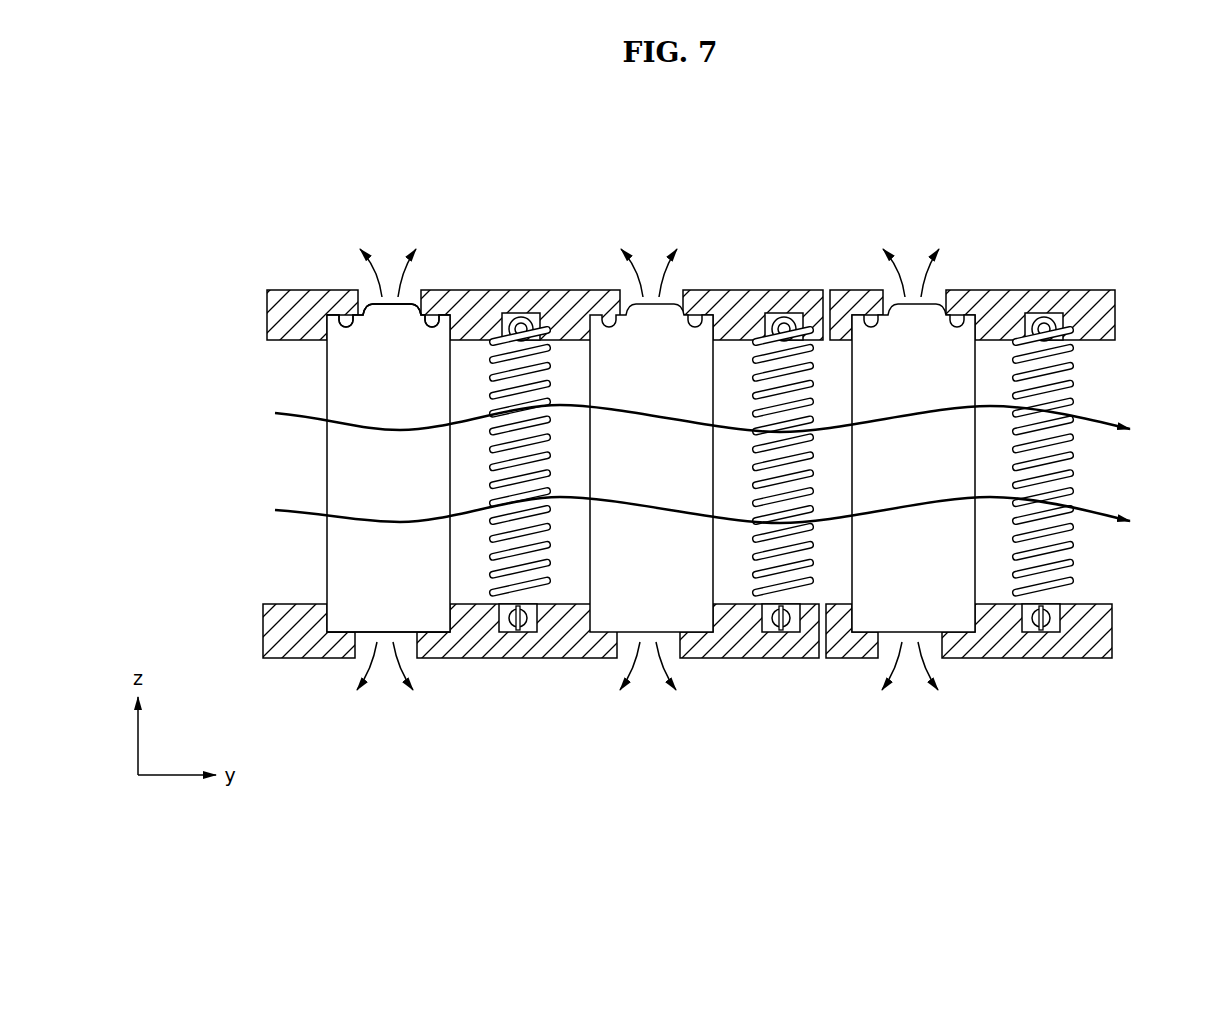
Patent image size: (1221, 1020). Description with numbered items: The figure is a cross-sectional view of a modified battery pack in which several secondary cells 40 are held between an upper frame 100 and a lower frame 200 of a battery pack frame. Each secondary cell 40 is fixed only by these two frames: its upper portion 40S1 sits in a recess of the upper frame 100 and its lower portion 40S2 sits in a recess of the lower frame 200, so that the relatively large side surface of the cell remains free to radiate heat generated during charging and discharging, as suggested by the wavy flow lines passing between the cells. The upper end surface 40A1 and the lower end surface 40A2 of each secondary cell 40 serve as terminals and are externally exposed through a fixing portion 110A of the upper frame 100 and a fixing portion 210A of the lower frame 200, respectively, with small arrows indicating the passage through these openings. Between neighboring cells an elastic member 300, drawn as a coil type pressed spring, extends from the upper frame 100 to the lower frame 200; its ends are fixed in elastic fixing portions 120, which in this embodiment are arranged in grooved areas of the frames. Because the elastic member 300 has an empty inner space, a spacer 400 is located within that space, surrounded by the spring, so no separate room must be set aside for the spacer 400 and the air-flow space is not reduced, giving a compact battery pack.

The secondary cell 40 is at (338, 463).
The upper portion of the secondary cell 40S1 is at (268, 339).
The lower portion of the secondary cell 40S2 is at (297, 603).
The upper end surface of the secondary cell 40A1 is at (383, 296).
The lower end surface of the secondary cell 40A2 is at (403, 634).
The upper frame 100 is at (1116, 322).
The fixing portion of the upper frame 110A is at (413, 296).
The elastic fixing portion 120 is at (518, 326).
The lower frame 200 is at (1111, 640).
The fixing portion of the lower frame 210A is at (384, 648).
The elastic member 300 is at (548, 340).
The spacer 400 is at (527, 345).